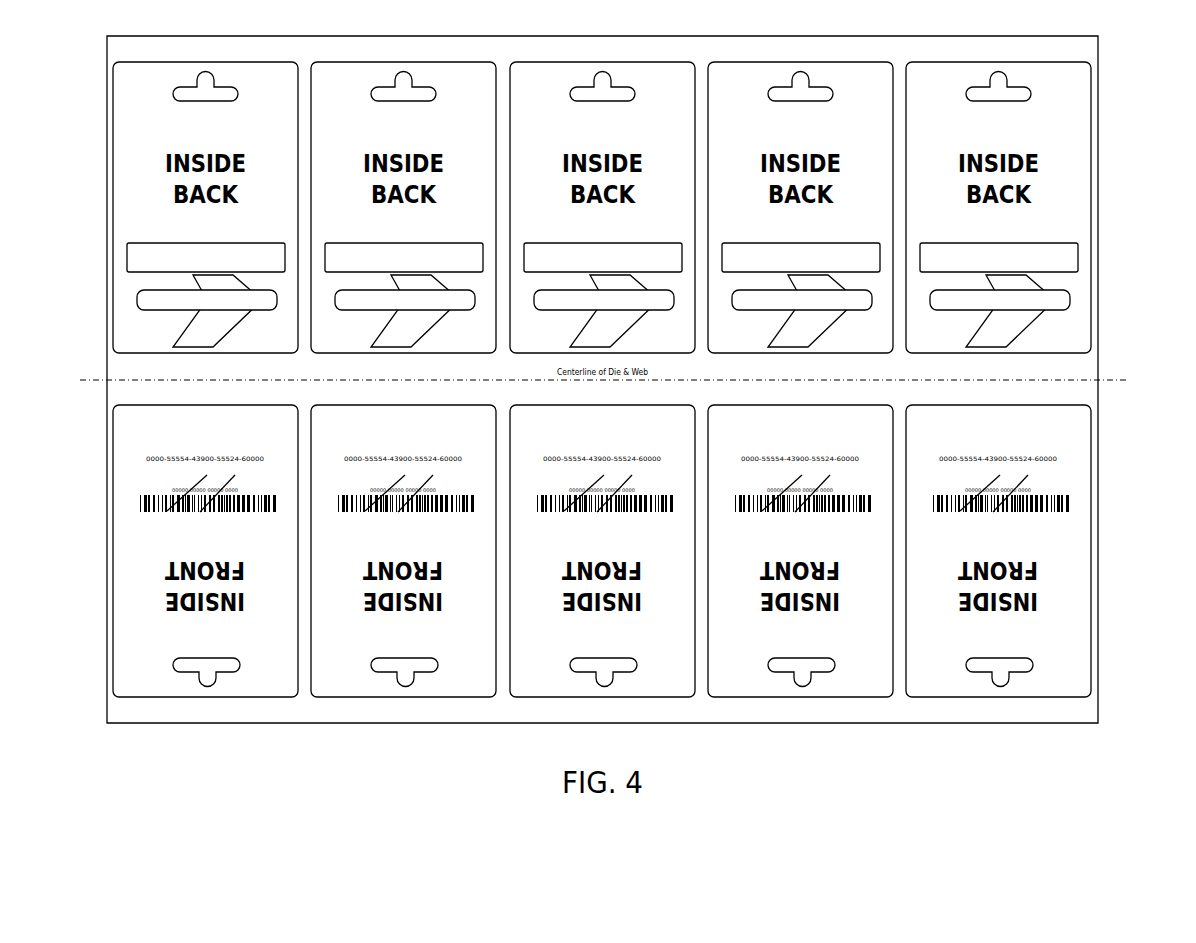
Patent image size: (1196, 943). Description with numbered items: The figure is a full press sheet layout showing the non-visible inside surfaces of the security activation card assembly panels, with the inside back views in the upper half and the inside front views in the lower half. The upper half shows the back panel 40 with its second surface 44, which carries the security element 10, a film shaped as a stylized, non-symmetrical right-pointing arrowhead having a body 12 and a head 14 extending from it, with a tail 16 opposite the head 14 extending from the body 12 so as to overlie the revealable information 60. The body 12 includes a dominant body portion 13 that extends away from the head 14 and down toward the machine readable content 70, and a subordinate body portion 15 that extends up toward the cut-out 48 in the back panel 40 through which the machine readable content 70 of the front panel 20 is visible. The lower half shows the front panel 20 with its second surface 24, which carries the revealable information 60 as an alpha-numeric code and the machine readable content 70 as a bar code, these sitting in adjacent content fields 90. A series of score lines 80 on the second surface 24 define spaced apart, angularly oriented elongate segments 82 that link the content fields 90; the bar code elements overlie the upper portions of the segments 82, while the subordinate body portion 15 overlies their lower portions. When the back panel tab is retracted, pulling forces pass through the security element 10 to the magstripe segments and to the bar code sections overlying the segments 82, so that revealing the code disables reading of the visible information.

The security element 10 is at (835, 280).
The body 12 is at (1034, 302).
The dominant body portion 13 is at (1017, 323).
The head 14 is at (1057, 298).
The subordinate body portion 15 is at (1017, 280).
The tail 16 is at (942, 300).
The front panel 20 is at (130, 638).
The second surface of the front panel 24 is at (279, 648).
The back panel 40 is at (126, 112).
The second surface of the back panel 44 is at (277, 128).
The cut-out 48 is at (221, 242).
The revealable information 60 is at (213, 462).
The machine readable content 70 is at (166, 514).
The score lines 80 is at (393, 475).
The segments 82 is at (442, 472).
The content fields 90 is at (152, 462).